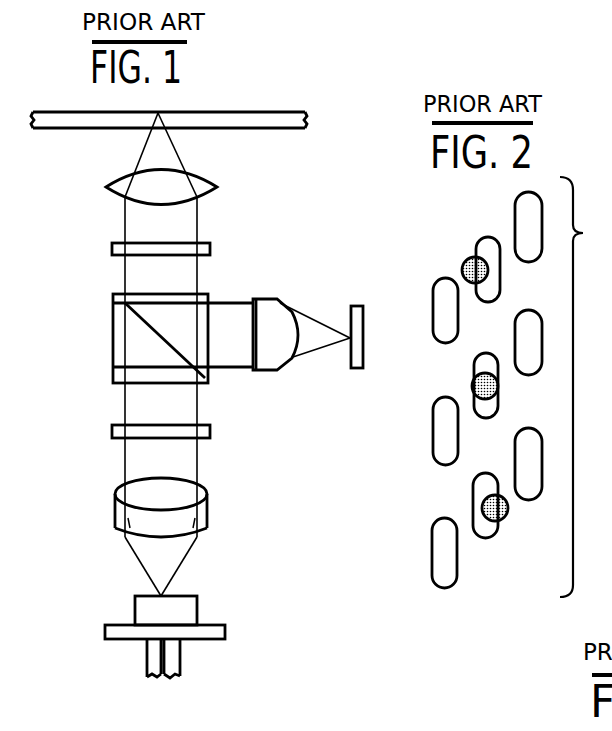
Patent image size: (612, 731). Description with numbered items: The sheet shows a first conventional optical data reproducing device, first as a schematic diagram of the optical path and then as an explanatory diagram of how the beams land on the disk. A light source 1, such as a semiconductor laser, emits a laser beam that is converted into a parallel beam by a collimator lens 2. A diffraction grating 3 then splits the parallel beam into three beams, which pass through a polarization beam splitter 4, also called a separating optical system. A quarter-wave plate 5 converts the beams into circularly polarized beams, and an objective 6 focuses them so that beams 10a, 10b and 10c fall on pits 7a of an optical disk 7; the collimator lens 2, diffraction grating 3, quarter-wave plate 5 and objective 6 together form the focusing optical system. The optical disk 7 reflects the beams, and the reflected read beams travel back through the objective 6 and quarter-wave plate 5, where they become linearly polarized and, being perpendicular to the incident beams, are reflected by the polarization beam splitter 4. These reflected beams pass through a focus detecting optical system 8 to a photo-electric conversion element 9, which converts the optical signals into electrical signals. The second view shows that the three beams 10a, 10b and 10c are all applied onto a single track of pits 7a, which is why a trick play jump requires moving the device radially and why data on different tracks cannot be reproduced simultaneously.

In FIG. 1, the light source 1 is at (197, 608).
In FIG. 1, the collimator lens 2 is at (207, 510).
In FIG. 1, the diffraction grating 3 is at (210, 425).
In FIG. 1, the polarization beam splitter 4 is at (113, 352).
In FIG. 1, the quarter-wave plate 5 is at (210, 243).
In FIG. 1, the objective 6 is at (214, 182).
In FIG. 1, the optical disk 7 is at (282, 129).
In FIG. 2, the pits 7a is at (480, 237).
In FIG. 1, the focus detecting optical system 8 is at (273, 300).
In FIG. 1, the photo-electric conversion element 9 is at (351, 312).
In FIG. 2, the beam 10a is at (463, 260).
In FIG. 2, the beam 10b is at (498, 387).
In FIG. 2, the beam 10c is at (508, 511).